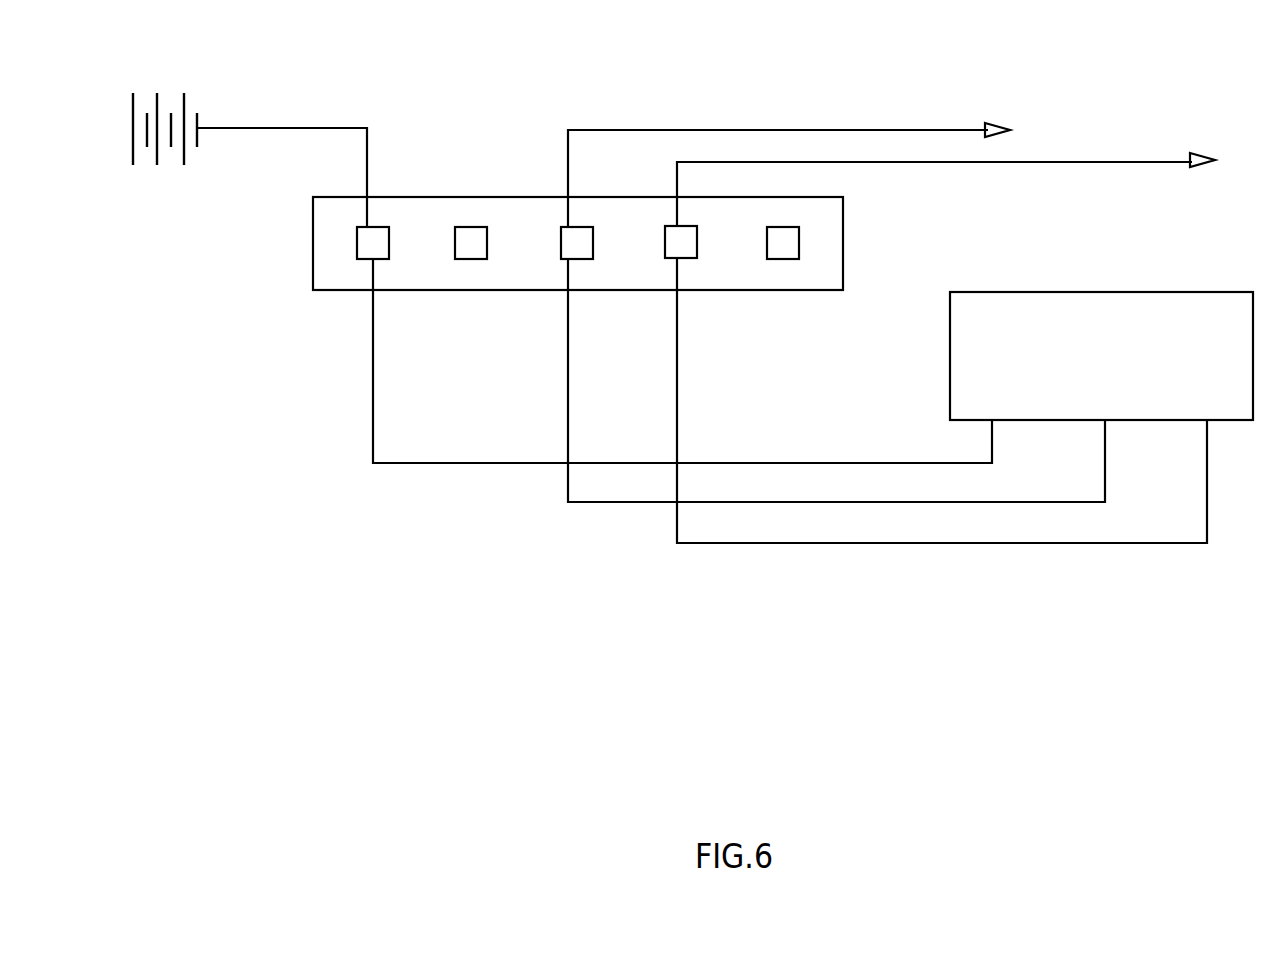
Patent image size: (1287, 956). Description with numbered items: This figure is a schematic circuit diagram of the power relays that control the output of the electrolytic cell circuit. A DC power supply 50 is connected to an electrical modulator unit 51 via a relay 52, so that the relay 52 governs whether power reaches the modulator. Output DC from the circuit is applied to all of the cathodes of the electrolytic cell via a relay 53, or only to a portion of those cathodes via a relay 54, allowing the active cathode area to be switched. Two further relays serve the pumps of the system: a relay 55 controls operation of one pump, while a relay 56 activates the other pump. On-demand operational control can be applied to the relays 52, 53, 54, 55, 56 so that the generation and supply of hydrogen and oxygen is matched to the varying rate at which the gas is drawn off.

The DC power supply 50 is at (168, 96).
The electrical modulator unit 51 is at (1237, 428).
The relay 52 is at (372, 243).
The relay 53 is at (566, 236).
The relay 54 is at (680, 247).
The relay 55 is at (468, 253).
The relay 56 is at (780, 243).